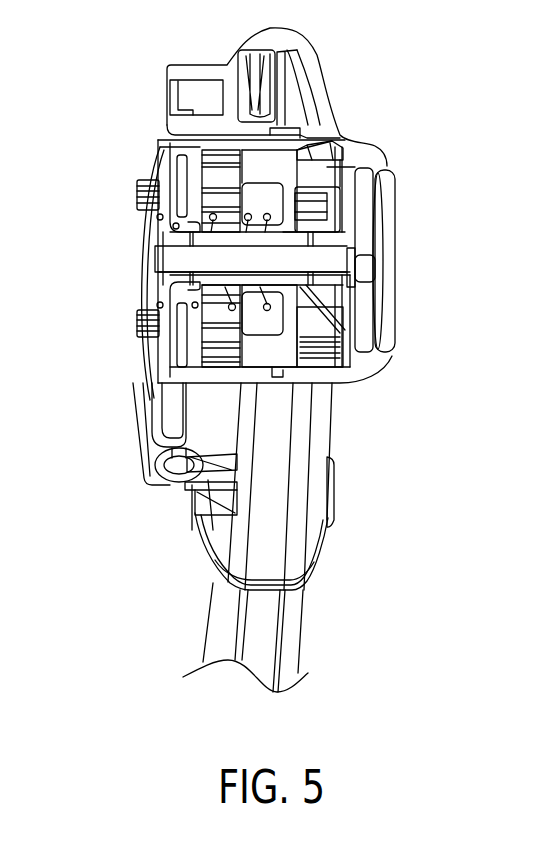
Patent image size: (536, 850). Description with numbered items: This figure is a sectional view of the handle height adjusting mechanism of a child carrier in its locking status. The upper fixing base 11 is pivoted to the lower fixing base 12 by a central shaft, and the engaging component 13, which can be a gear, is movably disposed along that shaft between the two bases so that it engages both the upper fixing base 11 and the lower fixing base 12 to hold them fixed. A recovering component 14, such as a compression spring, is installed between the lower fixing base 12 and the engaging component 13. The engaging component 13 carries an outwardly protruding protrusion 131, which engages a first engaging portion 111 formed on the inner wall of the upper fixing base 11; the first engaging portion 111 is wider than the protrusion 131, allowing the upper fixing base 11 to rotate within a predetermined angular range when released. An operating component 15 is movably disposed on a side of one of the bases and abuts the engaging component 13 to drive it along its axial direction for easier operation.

The upper fixing base 11 is at (362, 365).
The lower fixing base 12 is at (198, 203).
The engaging component 13 is at (258, 324).
The recovering component 14 is at (250, 217).
The operating component 15 is at (398, 283).
The first engaging portion 111 is at (330, 167).
The protrusion 131 is at (299, 160).